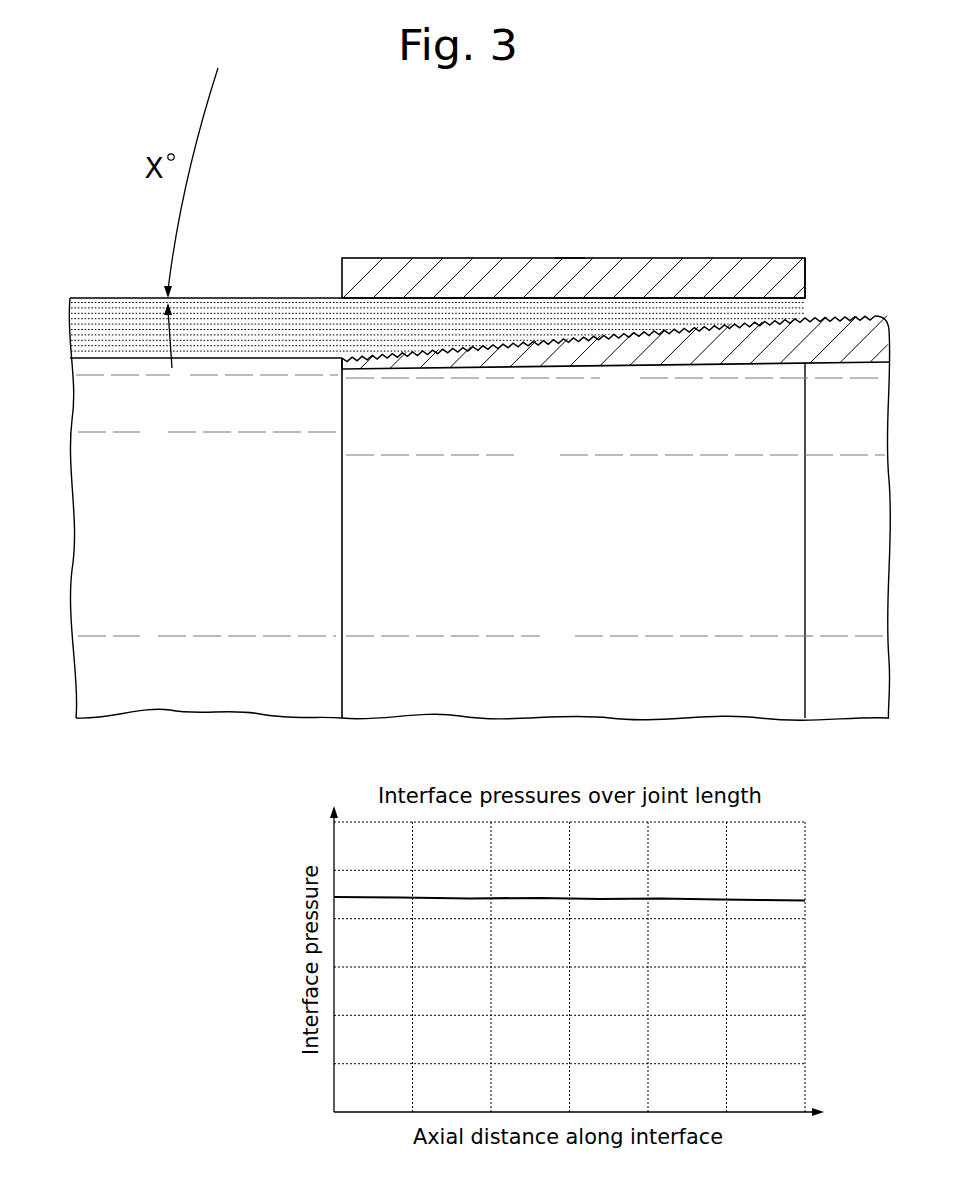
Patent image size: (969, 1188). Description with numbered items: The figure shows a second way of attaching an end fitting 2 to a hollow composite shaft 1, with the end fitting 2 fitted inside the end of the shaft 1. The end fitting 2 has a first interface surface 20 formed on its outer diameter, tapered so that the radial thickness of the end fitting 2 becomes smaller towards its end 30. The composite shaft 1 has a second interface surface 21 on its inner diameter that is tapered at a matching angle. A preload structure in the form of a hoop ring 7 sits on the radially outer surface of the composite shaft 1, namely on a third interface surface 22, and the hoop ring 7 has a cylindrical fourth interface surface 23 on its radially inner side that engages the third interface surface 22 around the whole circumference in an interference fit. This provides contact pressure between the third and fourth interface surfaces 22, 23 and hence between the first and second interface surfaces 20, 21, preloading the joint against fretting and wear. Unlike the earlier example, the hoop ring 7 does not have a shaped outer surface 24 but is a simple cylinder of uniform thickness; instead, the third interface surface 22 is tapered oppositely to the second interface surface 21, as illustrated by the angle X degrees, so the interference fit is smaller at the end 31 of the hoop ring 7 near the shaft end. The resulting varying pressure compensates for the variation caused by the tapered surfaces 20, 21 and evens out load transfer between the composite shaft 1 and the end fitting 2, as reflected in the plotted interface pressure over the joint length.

The composite shaft 1 is at (110, 330).
The end fitting 2 is at (410, 362).
The hoop ring 7 is at (380, 280).
The first interface surface 20 is at (640, 335).
The second interface surface 21 is at (645, 298).
The third interface surface 22 is at (526, 296).
The fourth interface surface 23 is at (457, 297).
The outer surface 24 is at (568, 258).
The end 30 is at (340, 364).
The end of the hoop ring 31 is at (806, 278).